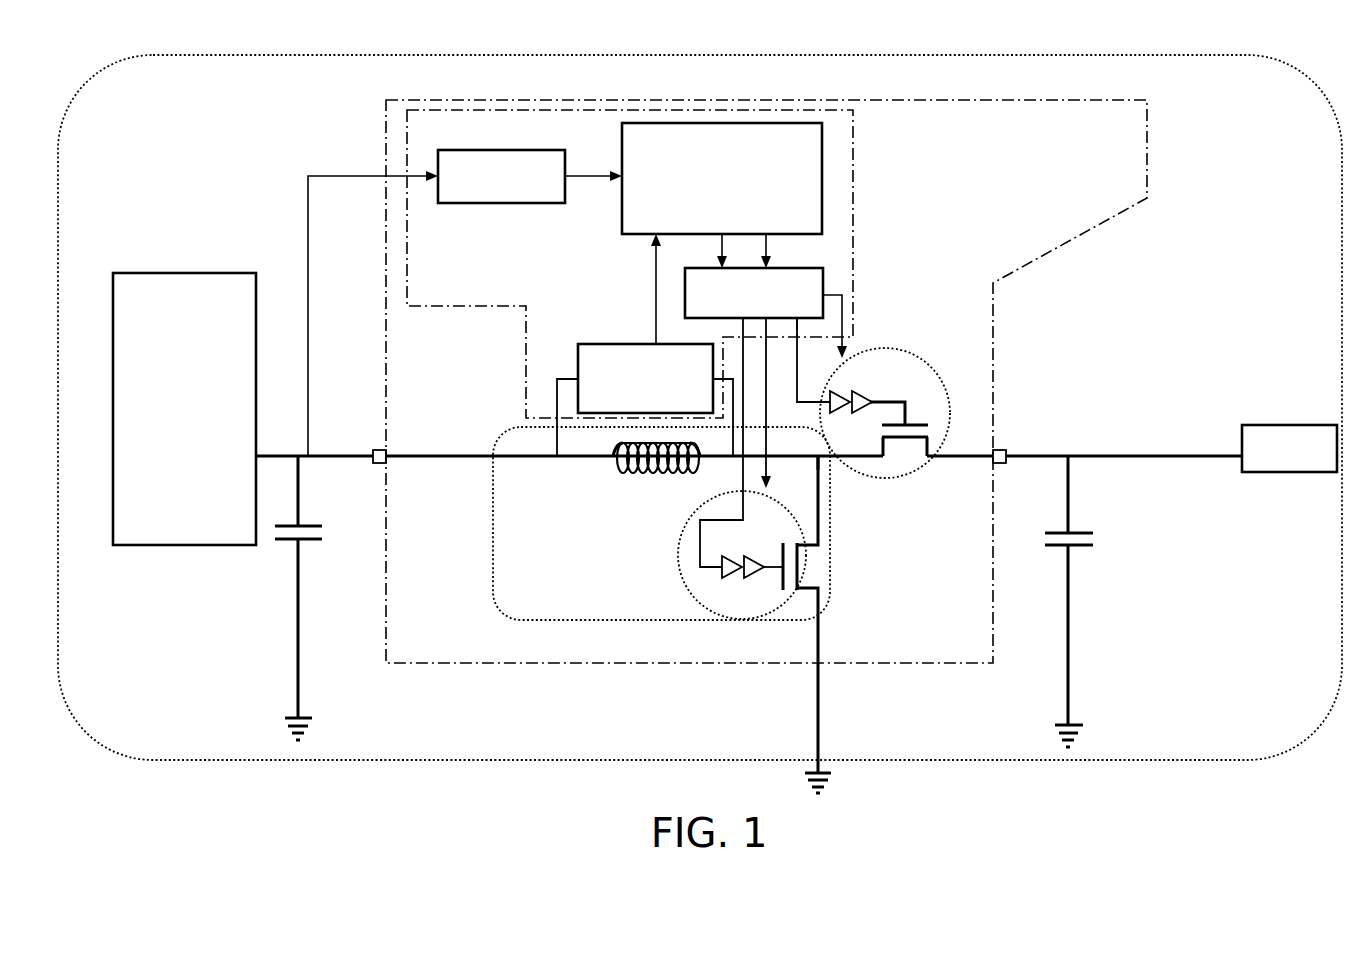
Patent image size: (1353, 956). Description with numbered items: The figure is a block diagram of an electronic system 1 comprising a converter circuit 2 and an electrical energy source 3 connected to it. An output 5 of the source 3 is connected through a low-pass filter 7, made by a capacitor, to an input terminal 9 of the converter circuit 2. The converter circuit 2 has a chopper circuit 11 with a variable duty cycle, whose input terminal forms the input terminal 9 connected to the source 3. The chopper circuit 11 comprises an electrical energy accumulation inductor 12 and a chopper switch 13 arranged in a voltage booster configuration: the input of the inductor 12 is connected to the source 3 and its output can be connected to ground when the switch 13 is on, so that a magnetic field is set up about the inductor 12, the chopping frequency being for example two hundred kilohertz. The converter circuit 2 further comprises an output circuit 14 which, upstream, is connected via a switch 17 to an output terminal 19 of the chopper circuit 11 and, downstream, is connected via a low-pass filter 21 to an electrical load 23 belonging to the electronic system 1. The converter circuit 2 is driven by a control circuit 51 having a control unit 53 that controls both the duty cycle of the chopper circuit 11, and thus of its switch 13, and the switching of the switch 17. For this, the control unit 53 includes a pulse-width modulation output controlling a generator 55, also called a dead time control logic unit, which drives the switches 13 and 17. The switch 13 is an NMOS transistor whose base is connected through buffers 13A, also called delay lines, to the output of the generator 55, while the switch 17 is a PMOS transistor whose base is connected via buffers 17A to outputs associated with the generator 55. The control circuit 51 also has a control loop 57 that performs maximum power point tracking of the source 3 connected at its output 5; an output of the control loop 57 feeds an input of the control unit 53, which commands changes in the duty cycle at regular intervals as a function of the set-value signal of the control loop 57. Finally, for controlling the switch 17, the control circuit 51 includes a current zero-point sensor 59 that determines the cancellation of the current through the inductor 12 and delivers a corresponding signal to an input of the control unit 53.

The electronic system 1 is at (973, 55).
The converter circuit 2 is at (636, 665).
The electrical energy source 3 is at (184, 273).
The output 5 is at (256, 454).
The low-pass filter 7 is at (296, 547).
The input terminal 9 is at (387, 450).
The chopper circuit 11 is at (493, 528).
The electrical energy accumulation inductor 12 is at (634, 475).
The chopper switch 13 is at (783, 567).
The buffers 13A is at (722, 571).
The output circuit 14 is at (888, 479).
The switch 17 is at (906, 400).
The buffers 17A is at (830, 396).
The output terminal 19 is at (818, 458).
The low-pass filter 21 is at (1082, 540).
The electrical load 23 is at (1290, 425).
The control circuit 51 is at (565, 108).
The control unit 53 is at (622, 210).
The generator 55 is at (798, 268).
The control loop 57 is at (504, 150).
The current zero-point sensor 59 is at (603, 344).